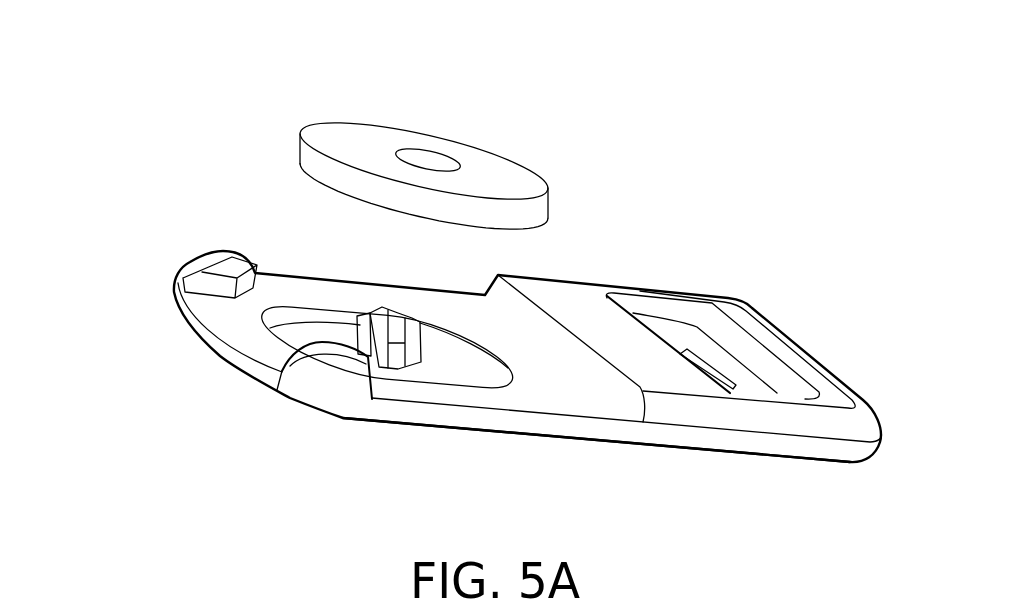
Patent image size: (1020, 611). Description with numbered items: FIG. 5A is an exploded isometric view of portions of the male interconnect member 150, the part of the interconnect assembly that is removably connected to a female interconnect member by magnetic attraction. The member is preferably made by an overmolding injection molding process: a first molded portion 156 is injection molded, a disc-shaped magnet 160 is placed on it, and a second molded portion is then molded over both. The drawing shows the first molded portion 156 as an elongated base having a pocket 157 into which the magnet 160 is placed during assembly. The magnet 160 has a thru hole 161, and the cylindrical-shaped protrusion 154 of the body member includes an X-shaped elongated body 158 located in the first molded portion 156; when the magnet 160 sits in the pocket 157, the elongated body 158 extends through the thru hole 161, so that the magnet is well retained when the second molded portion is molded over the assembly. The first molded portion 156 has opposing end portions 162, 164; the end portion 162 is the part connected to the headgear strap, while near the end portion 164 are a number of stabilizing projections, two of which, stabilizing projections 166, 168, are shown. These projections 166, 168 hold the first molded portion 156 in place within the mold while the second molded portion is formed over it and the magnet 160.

The male interconnect member 150 is at (154, 224).
The cylindrical-shaped protrusion 154 is at (303, 271).
The first molded portion 156 is at (520, 444).
The pocket 157 is at (453, 375).
The X-shaped elongated body 158 is at (401, 300).
The disc-shaped magnet 160 is at (497, 100).
The thru hole 161 is at (428, 158).
The end portion 162 is at (763, 338).
The end portion 164 is at (215, 318).
The stabilizing projection 166 is at (318, 368).
The stabilizing projection 168 is at (203, 277).